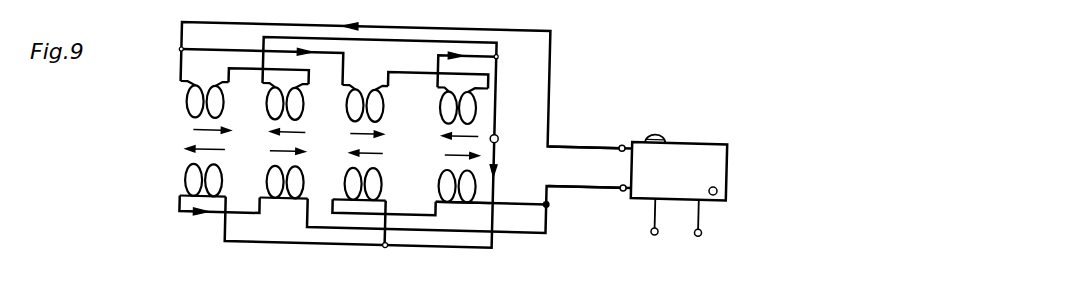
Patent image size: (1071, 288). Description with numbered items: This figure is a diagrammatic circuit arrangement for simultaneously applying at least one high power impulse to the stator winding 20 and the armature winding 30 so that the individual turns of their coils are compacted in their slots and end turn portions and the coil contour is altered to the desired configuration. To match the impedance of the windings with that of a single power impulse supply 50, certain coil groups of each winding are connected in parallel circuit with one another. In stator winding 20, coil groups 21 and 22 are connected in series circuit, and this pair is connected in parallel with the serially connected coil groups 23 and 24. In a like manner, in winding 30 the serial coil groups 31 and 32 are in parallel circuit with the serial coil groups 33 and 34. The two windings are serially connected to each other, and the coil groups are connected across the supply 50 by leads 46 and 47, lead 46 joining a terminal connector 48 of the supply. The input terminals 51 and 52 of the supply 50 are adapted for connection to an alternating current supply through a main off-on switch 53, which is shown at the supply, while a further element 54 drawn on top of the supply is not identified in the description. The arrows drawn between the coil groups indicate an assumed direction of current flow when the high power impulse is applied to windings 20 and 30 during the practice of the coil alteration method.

The stator winding 20 is at (186, 98).
The coil group 21 is at (204, 82).
The coil group 22 is at (290, 86).
The coil group 23 is at (366, 87).
The coil group 24 is at (462, 87).
The armature winding 30 is at (185, 178).
The coil group 31 is at (200, 196).
The coil group 32 is at (288, 199).
The coil group 33 is at (365, 201).
The coil group 34 is at (460, 203).
The lead 46 is at (595, 146).
The lead 47 is at (596, 191).
The terminal connector 48 is at (626, 143).
The power impulse supply 50 is at (716, 143).
The input terminal 51 is at (657, 235).
The input terminal 52 is at (700, 236).
The main off-on switch 53 is at (718, 195).
The push button 54 is at (658, 134).